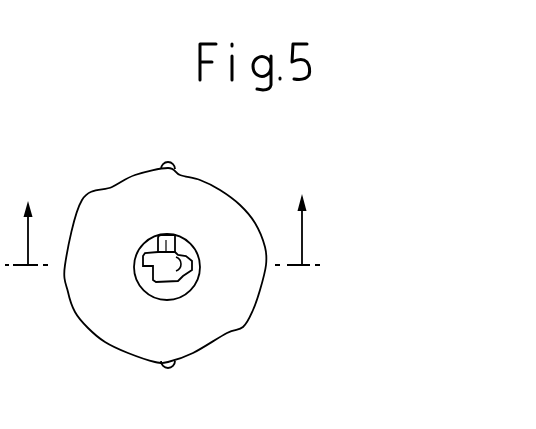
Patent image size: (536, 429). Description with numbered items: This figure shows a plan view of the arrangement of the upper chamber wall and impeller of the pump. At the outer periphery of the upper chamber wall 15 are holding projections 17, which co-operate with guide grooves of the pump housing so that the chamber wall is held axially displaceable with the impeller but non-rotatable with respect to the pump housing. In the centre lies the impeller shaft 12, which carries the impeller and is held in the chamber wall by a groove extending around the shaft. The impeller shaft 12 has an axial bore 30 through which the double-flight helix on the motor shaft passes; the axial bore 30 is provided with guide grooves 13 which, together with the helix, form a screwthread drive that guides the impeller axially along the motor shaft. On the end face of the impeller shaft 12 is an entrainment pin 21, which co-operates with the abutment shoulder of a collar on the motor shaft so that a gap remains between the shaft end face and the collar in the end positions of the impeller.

The impeller shaft 12 is at (188, 293).
The guide grooves 13 is at (156, 276).
The upper chamber wall 15 is at (259, 310).
The holding projections 17 is at (166, 163).
The entrainment pin 21 is at (178, 243).
The axial bore 30 is at (182, 243).